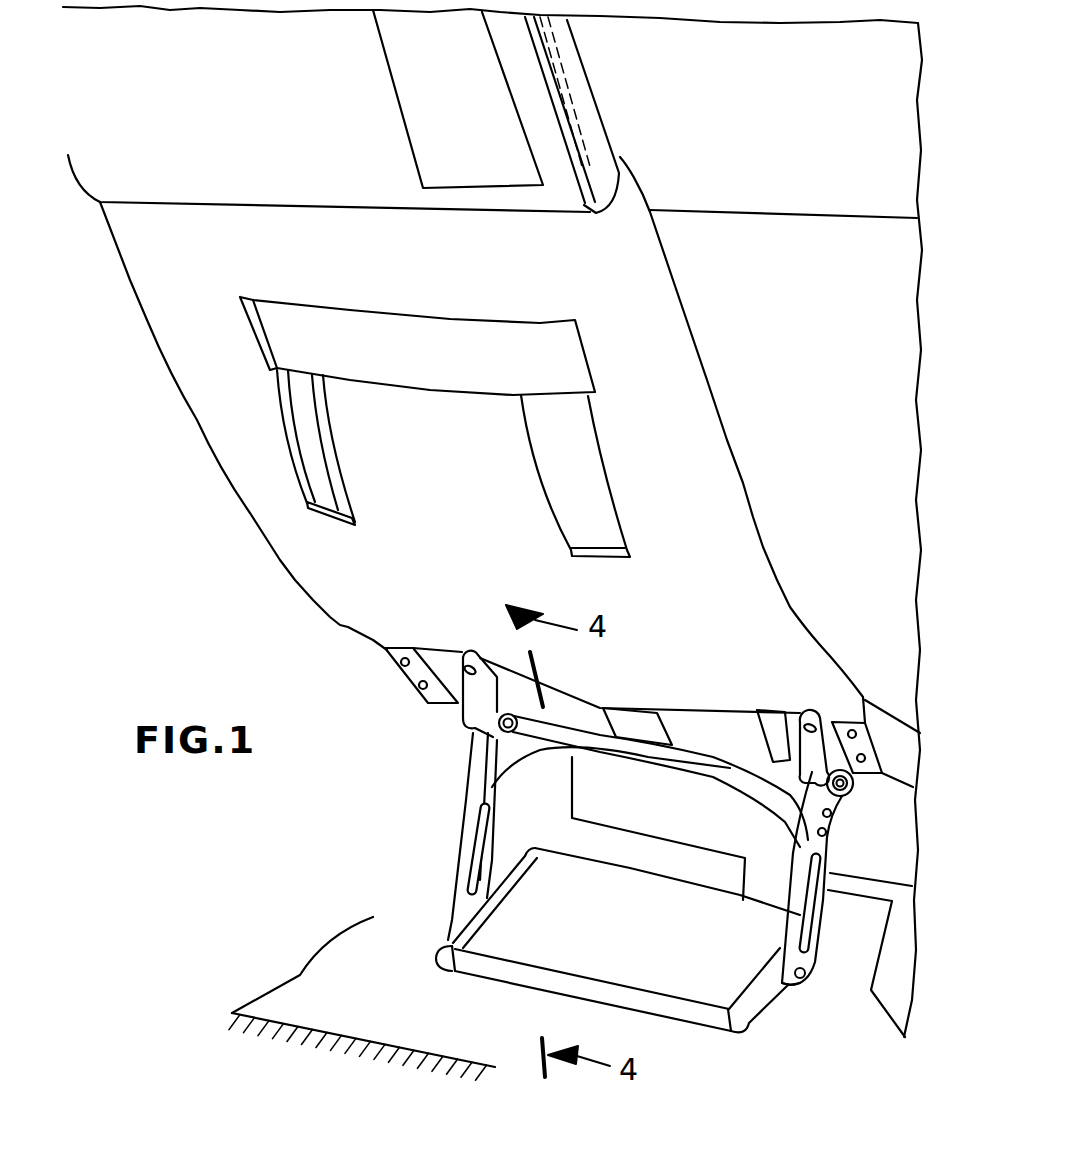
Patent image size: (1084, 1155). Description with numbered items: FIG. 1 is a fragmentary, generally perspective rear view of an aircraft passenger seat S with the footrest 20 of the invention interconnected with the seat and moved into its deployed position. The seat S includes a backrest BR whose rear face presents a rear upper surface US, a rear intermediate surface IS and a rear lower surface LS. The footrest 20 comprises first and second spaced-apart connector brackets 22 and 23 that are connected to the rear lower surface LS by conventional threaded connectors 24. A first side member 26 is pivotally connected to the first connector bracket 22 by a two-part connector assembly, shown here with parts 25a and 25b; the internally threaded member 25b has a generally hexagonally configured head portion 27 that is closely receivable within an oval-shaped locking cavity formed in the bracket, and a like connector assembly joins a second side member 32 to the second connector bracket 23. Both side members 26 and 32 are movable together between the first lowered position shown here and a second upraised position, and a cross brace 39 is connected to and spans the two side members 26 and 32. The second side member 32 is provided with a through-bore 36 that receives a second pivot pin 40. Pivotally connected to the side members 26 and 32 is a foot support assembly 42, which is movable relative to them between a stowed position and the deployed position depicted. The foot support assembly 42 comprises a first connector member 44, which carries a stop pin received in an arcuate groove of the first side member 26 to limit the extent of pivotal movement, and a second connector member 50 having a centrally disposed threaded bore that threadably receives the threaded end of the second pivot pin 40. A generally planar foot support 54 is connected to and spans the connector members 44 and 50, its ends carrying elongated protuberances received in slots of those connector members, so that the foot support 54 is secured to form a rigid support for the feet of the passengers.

The aircraft passenger seat S is at (143, 368).
The backrest BR is at (232, 414).
The rear upper surface US is at (421, 259).
The rear intermediate surface IS is at (443, 477).
The rear lower surface LS is at (443, 668).
The footrest 20 is at (397, 798).
The first connector bracket 22 is at (470, 650).
The second connector bracket 23 is at (823, 717).
The threaded connectors 24 is at (427, 702).
The pivot 25a is at (846, 791).
The internally threaded member 25b is at (509, 736).
The first side member 26 is at (458, 868).
The head portion 27 is at (500, 723).
The second side member 32 is at (787, 921).
The through-bore 36 is at (803, 979).
The cross brace 39 is at (670, 762).
The second pivot pin 40 is at (807, 970).
The foot support assembly 42 is at (489, 985).
The first connector member 44 is at (440, 940).
The second connector member 50 is at (760, 1013).
The planar foot support 54 is at (626, 898).